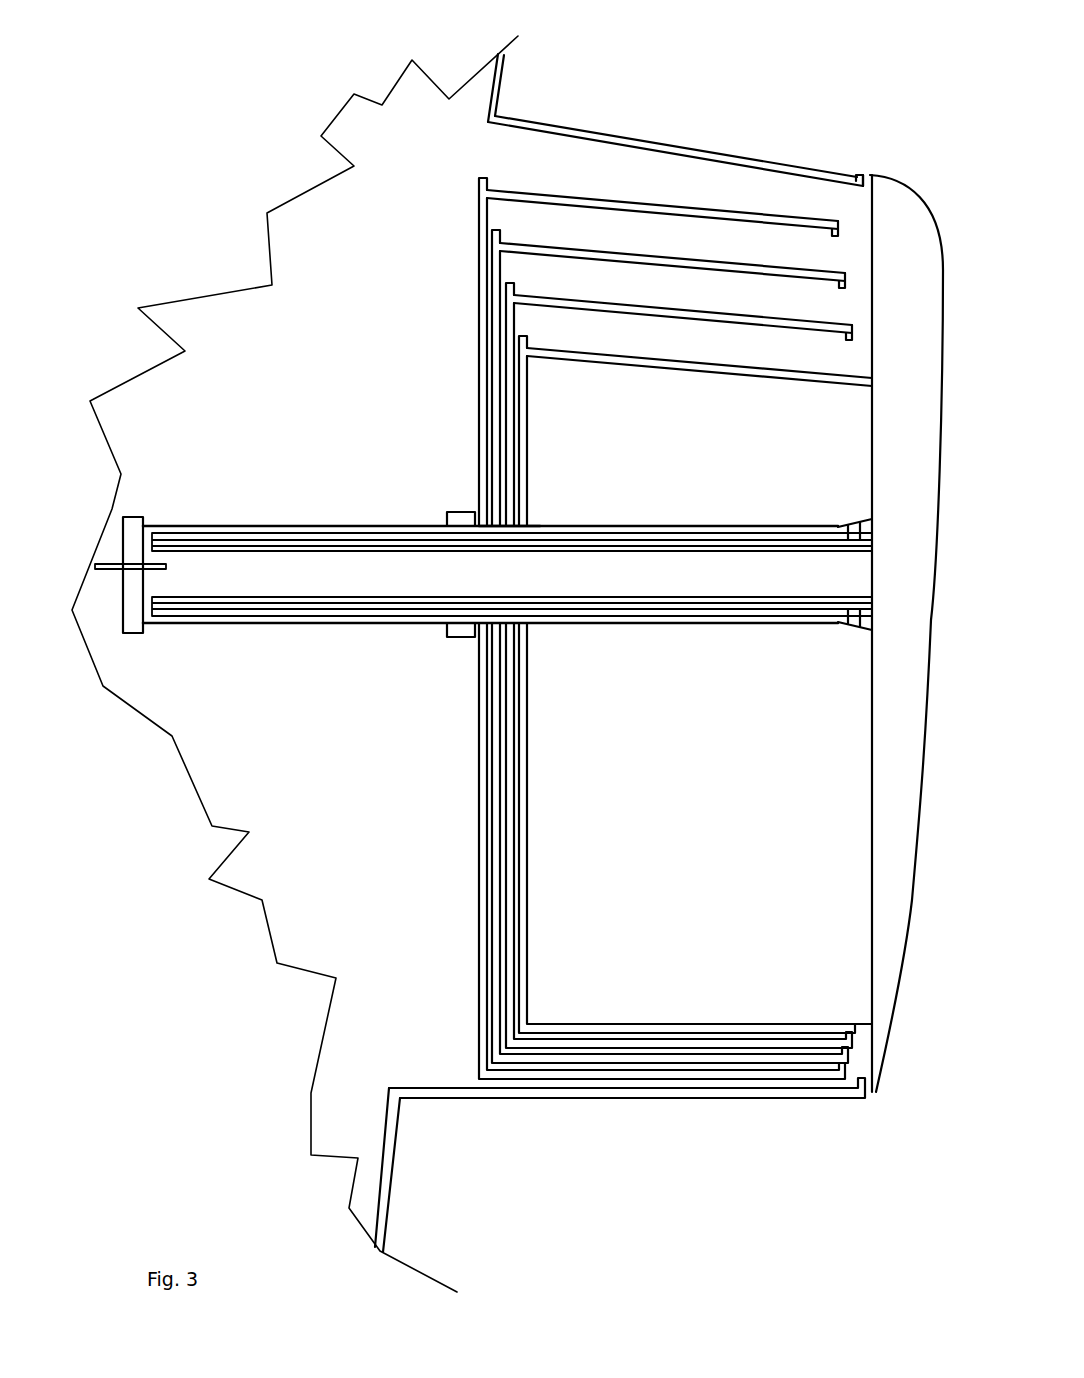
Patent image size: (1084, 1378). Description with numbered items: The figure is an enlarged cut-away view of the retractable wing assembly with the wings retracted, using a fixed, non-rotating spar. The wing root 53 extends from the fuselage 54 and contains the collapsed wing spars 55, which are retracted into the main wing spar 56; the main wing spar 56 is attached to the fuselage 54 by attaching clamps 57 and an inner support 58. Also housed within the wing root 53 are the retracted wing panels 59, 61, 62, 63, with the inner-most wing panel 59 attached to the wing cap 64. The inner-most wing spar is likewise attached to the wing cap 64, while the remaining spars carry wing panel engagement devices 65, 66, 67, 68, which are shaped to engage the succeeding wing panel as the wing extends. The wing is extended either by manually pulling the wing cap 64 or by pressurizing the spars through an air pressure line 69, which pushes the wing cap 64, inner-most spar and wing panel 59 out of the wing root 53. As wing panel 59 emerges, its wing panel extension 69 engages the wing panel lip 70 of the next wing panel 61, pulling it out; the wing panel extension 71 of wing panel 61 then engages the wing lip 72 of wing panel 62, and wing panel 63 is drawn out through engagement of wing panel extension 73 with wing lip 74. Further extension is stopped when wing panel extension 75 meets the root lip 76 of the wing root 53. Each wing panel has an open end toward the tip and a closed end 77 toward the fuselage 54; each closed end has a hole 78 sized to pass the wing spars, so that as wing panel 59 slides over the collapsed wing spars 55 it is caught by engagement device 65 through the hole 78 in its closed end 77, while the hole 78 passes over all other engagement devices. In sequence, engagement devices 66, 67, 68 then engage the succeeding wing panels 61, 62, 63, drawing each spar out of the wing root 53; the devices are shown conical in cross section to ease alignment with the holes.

The wing root 53 is at (718, 140).
The fuselage 54 is at (502, 85).
The collapsed wing spars 55 is at (689, 613).
The main wing spar 56 is at (296, 522).
The attaching clamps 57 is at (451, 511).
The inner support 58 is at (125, 517).
The wing panel 59 is at (725, 377).
The wing panel 61 is at (752, 326).
The wing panel 62 is at (781, 278).
The wing panel 63 is at (800, 229).
The wing cap 64 is at (870, 446).
The wing panel engagement device 65 is at (870, 630).
The wing panel engagement device 66 is at (856, 520).
The wing panel engagement device 67 is at (840, 622).
The wing panel engagement device 68 is at (838, 528).
The air pressure line 69 is at (527, 341).
The wing panel lip 70 is at (858, 339).
The wing panel extension 71 is at (514, 286).
The wing lip 72 is at (852, 284).
The wing panel extension 73 is at (500, 232).
The wing lip 74 is at (846, 229).
The wing panel extension 75 is at (478, 172).
The root lip 76 is at (862, 165).
The closed end 77 is at (540, 440).
The hole 78 is at (533, 526).